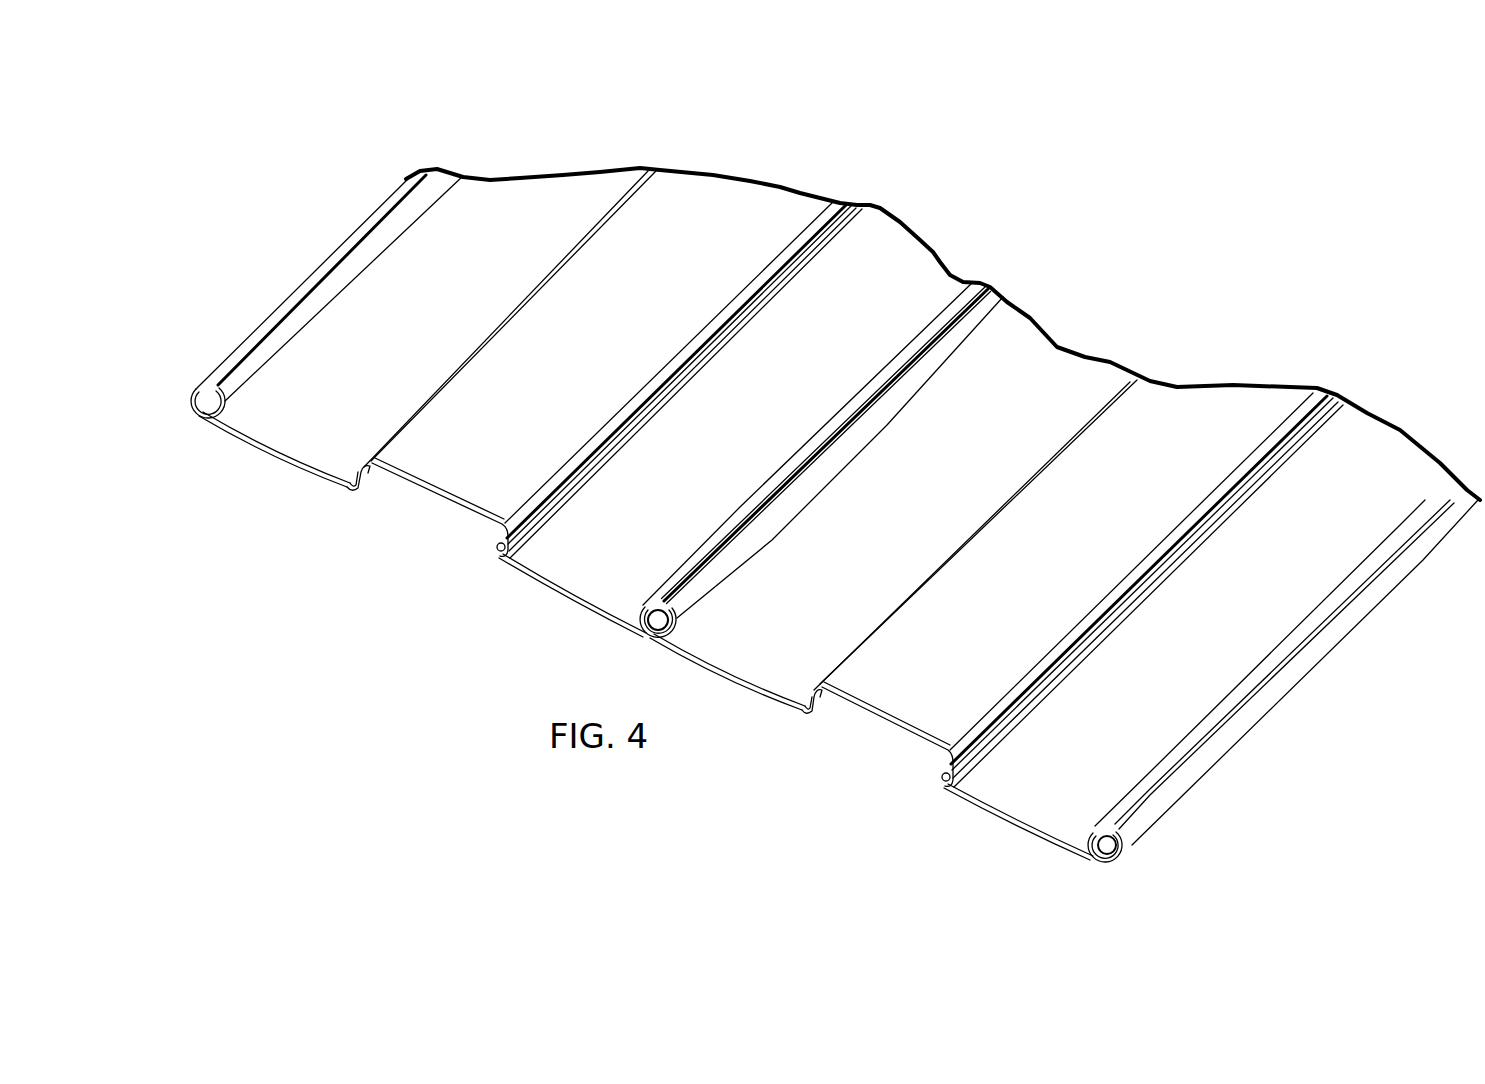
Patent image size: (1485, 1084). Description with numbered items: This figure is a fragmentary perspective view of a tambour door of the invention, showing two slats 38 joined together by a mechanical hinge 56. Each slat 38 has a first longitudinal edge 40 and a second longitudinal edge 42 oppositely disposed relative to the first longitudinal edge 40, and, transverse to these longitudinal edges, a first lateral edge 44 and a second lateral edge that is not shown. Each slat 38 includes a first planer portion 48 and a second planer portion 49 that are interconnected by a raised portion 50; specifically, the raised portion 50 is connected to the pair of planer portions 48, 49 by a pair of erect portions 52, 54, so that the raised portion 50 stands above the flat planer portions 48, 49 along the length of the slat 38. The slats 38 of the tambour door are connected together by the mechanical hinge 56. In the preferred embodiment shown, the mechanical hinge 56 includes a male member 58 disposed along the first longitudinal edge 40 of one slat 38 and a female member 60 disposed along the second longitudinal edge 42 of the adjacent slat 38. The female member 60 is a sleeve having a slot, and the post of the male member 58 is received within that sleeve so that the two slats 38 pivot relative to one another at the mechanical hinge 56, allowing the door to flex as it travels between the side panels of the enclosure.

The slat 38 is at (720, 234).
The first longitudinal edge 40 is at (1092, 862).
The second longitudinal edge 42 is at (228, 415).
The first lateral edge 44 is at (525, 576).
The first planer portion 48 is at (715, 470).
The second planer portion 49 is at (402, 331).
The raised portion 50 is at (572, 383).
The erect portion 52 is at (553, 513).
The erect portion 54 is at (382, 432).
The mechanical hinge 56 is at (993, 285).
The male member 58 is at (1178, 818).
The female member 60 is at (206, 398).